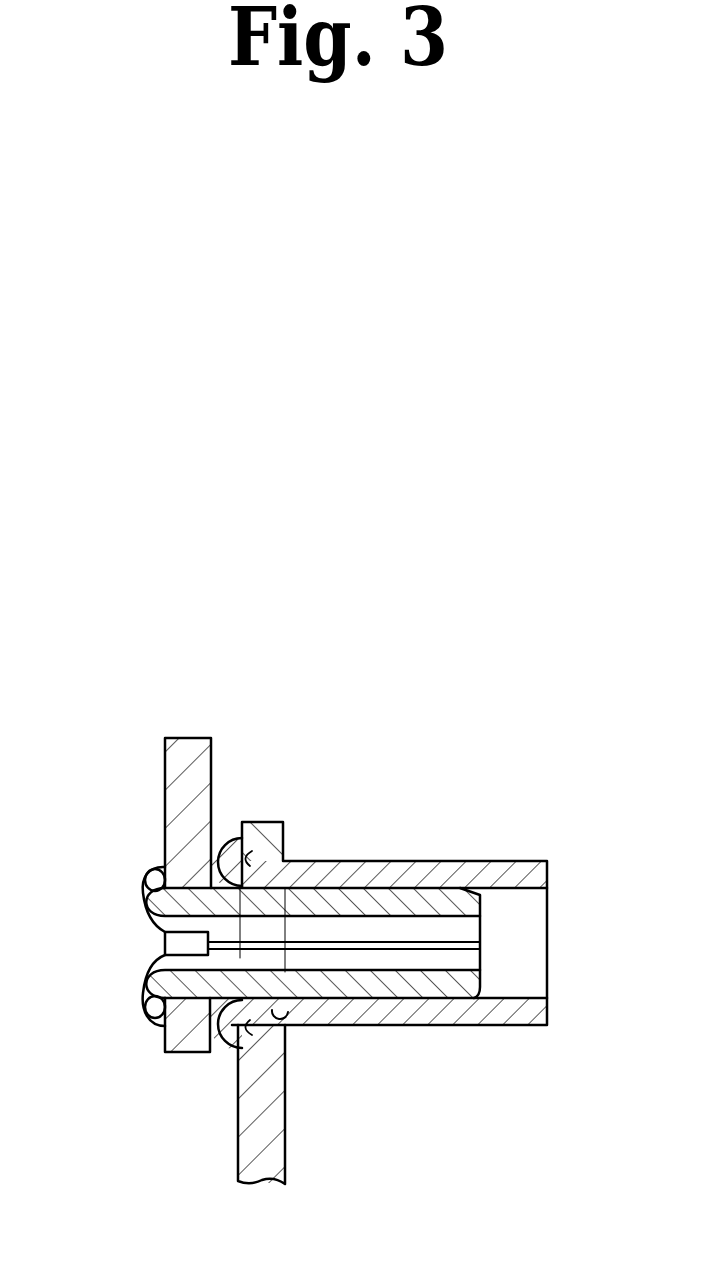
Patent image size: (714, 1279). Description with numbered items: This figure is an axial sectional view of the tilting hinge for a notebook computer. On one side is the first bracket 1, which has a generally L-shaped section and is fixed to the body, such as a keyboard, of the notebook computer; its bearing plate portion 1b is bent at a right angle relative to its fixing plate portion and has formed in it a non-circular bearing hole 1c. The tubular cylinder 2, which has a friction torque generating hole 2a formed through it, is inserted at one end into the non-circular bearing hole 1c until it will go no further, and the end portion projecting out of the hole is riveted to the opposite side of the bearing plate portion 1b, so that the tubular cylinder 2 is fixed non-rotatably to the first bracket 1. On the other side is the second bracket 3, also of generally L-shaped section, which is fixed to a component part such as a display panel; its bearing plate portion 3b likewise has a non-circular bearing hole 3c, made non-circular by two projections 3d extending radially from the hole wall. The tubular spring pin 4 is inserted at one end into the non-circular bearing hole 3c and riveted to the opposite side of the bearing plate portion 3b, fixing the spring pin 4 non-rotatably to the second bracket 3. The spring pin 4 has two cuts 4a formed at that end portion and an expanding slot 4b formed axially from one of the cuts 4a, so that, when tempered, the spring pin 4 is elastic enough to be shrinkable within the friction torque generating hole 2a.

The first bracket 1 is at (250, 1091).
The bearing plate portion 1b is at (279, 1132).
The non-circular bearing hole 1c is at (282, 1015).
The tubular cylinder 2 is at (356, 908).
The friction torque generating hole 2a is at (506, 893).
The second bracket 3 is at (161, 796).
The bearing plate portion 3b is at (175, 784).
The non-circular bearing hole 3c is at (142, 893).
The projections 3d is at (184, 948).
The tubular spring pin 4 is at (349, 969).
The cuts 4a is at (142, 1000).
The expanding slot 4b is at (462, 938).